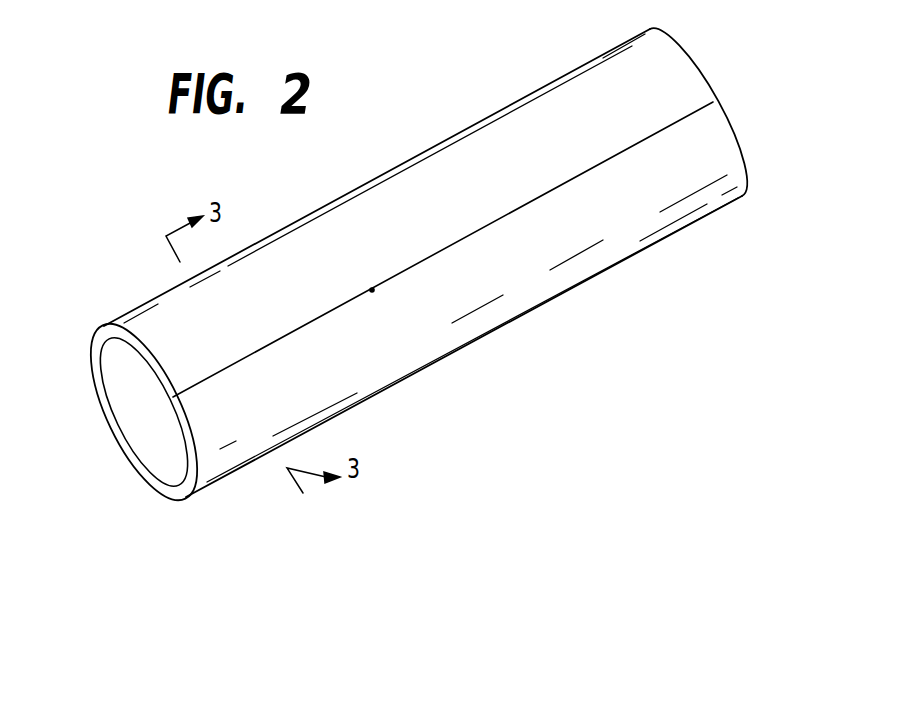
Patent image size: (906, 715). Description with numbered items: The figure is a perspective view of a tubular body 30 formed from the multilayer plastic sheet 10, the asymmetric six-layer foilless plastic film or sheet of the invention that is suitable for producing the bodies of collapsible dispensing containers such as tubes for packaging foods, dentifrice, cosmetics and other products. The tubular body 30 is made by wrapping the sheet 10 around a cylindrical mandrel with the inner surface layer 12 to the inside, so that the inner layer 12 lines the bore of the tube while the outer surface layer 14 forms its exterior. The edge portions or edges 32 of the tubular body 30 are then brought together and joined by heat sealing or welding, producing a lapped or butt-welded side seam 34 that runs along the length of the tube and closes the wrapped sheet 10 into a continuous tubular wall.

The multilayer plastic structure 10 is at (678, 72).
The inner surface layer 12 is at (147, 441).
The outer surface layer 14 is at (571, 144).
The tubular body 30 is at (334, 177).
The edge portions 32 is at (470, 232).
The side seam 34 is at (374, 292).